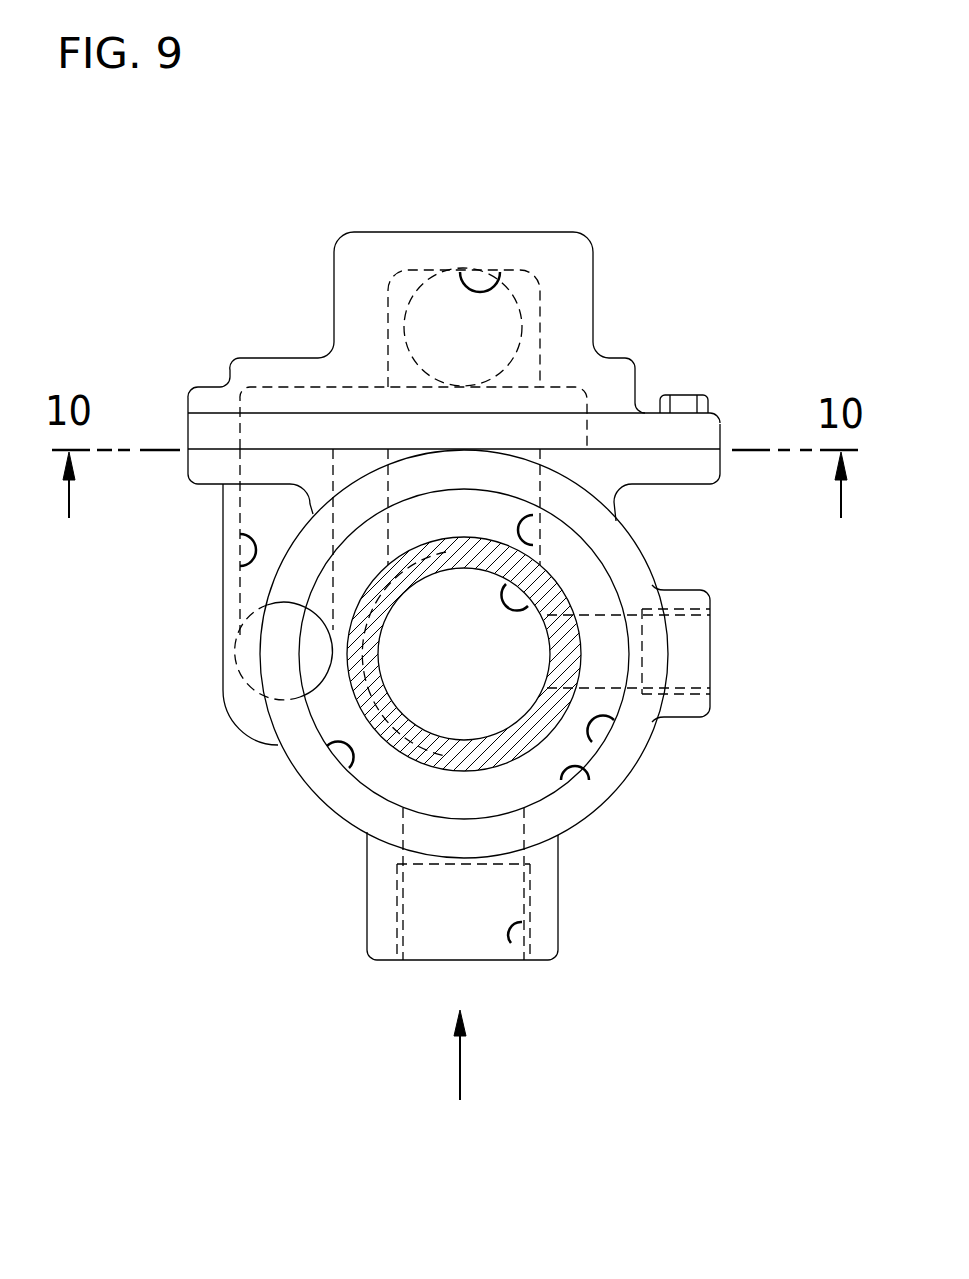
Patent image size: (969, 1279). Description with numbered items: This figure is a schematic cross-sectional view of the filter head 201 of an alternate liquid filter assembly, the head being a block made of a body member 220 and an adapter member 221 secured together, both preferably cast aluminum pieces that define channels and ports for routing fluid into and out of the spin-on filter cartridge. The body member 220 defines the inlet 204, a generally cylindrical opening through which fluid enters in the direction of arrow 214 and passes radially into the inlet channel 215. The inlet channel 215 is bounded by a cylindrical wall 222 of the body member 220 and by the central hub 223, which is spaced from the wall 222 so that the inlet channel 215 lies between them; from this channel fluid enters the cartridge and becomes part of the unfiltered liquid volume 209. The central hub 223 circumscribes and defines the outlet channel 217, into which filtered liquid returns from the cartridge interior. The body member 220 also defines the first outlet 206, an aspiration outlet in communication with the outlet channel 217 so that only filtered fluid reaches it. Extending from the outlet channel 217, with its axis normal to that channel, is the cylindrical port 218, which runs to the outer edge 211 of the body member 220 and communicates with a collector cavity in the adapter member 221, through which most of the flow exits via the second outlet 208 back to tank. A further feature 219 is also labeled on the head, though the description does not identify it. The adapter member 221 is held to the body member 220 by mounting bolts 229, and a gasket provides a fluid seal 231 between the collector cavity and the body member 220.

The filter head 201 is at (155, 267).
The inlet 204 is at (509, 942).
The first outlet 206 is at (687, 688).
The second outlet 208 is at (502, 283).
The unfiltered liquid volume 209 is at (614, 722).
The outer edge 211 is at (188, 449).
The arrow 214 is at (460, 1080).
The inlet channel 215 is at (587, 768).
The outlet channel 217 is at (524, 608).
The port 218 is at (540, 542).
The bolt hole 219 is at (240, 562).
The body member 220 is at (345, 818).
The adapter member 221 is at (273, 358).
The wall 222 is at (350, 768).
The central hub 223 is at (385, 697).
The mounting bolts 229 is at (690, 393).
The fluid seal 231 is at (638, 450).